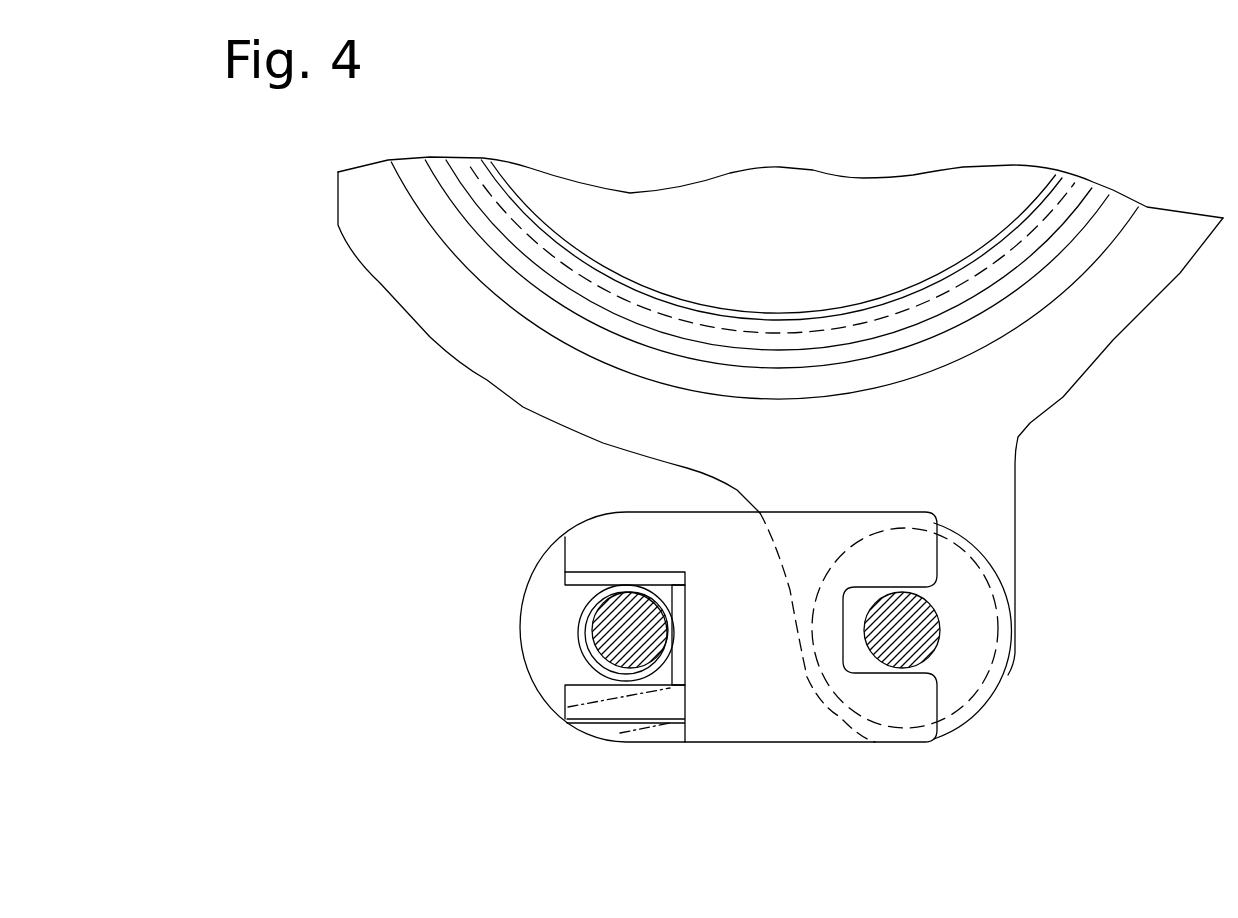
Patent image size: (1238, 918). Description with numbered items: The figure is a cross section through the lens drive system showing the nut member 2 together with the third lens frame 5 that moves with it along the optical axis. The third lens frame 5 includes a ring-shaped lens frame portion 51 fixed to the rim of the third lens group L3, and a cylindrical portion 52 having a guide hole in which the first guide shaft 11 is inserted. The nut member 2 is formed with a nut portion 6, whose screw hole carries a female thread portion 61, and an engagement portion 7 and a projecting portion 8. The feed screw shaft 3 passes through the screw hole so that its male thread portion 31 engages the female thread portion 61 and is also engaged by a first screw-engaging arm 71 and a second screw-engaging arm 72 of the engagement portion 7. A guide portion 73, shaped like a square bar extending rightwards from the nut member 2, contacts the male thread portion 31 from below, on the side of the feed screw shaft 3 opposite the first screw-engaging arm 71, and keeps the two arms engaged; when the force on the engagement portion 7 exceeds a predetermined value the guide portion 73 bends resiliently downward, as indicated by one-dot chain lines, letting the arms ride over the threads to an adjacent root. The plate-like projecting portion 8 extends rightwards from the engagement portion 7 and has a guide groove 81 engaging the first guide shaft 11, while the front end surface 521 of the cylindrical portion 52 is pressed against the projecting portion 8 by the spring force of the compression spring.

The nut member 2 is at (769, 742).
The feed screw shaft 3 is at (592, 645).
The male thread portion 31 is at (580, 645).
The third lens frame 5 is at (1017, 488).
The lens frame portion 51 is at (1102, 317).
The cylindrical portion 52 is at (963, 678).
The front end surface 521 is at (975, 610).
The nut portion 6 is at (545, 602).
The female thread portion 61 is at (582, 608).
The engagement portion 7 is at (628, 545).
The first screw-engaging arm 71 is at (573, 577).
The second screw-engaging arm 72 is at (687, 677).
The guide portion 73 is at (620, 708).
The projecting portion 8 is at (903, 700).
The guide groove 81 is at (855, 653).
The first guide shaft 11 is at (928, 638).
The third lens group L3 is at (642, 228).